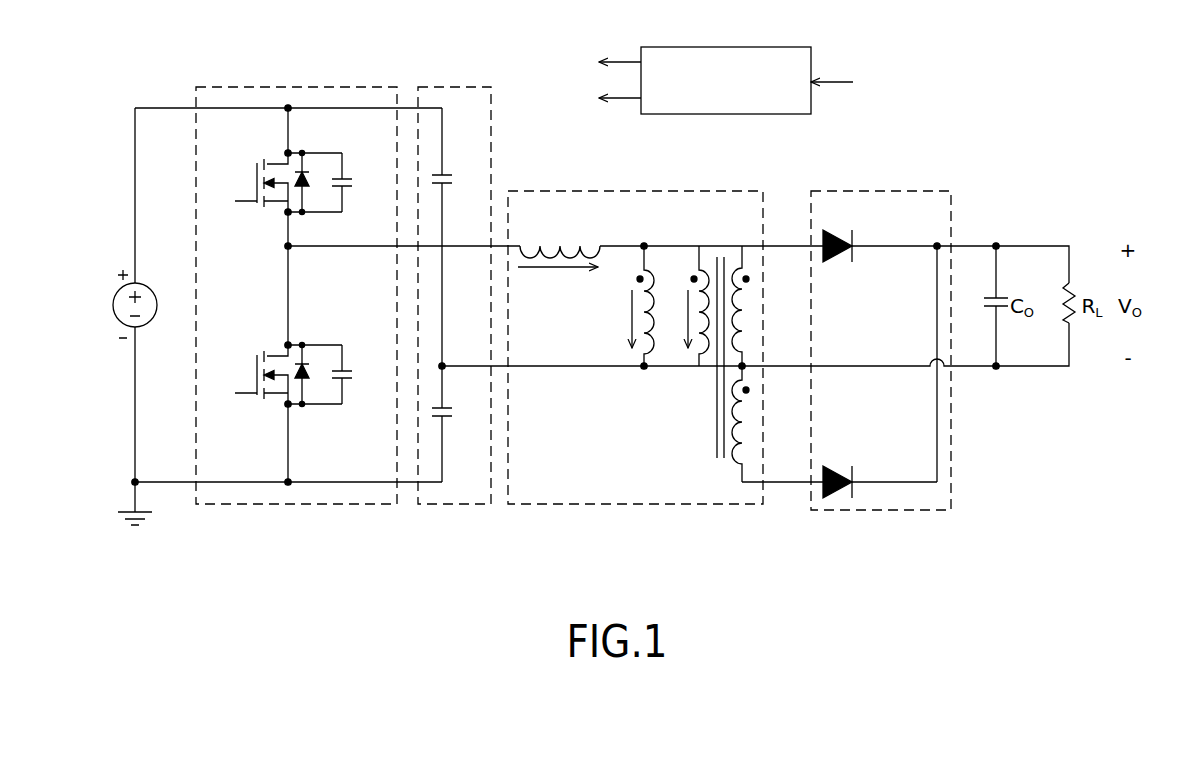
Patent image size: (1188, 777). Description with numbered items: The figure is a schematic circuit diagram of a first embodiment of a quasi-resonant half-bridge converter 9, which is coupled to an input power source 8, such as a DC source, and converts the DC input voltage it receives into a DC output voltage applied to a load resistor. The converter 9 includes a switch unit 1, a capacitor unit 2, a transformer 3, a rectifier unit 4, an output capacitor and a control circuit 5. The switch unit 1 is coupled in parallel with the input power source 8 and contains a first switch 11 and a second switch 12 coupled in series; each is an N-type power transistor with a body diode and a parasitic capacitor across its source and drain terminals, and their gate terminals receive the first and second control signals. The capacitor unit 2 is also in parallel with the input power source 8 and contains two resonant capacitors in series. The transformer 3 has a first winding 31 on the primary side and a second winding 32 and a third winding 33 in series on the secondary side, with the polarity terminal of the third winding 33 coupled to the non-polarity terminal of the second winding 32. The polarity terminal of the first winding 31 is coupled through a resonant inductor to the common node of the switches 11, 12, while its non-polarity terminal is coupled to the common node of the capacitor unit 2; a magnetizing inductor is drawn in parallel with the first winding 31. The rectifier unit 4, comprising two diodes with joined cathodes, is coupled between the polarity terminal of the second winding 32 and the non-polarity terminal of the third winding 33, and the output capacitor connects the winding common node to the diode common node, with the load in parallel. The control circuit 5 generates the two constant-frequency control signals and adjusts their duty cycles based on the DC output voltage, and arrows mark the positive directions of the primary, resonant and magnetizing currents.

The switch unit 1 is at (358, 87).
The capacitor unit 2 is at (453, 87).
The transformer 3 is at (726, 191).
The rectifier unit 4 is at (908, 191).
The control circuit 5 is at (797, 47).
The input power source 8 is at (148, 285).
The quasi-resonant half-bridge converter 9 is at (405, 528).
The first switch 11 is at (262, 214).
The second switch 12 is at (262, 406).
The first winding 31 is at (700, 270).
The second winding 32 is at (744, 298).
The third winding 33 is at (744, 410).